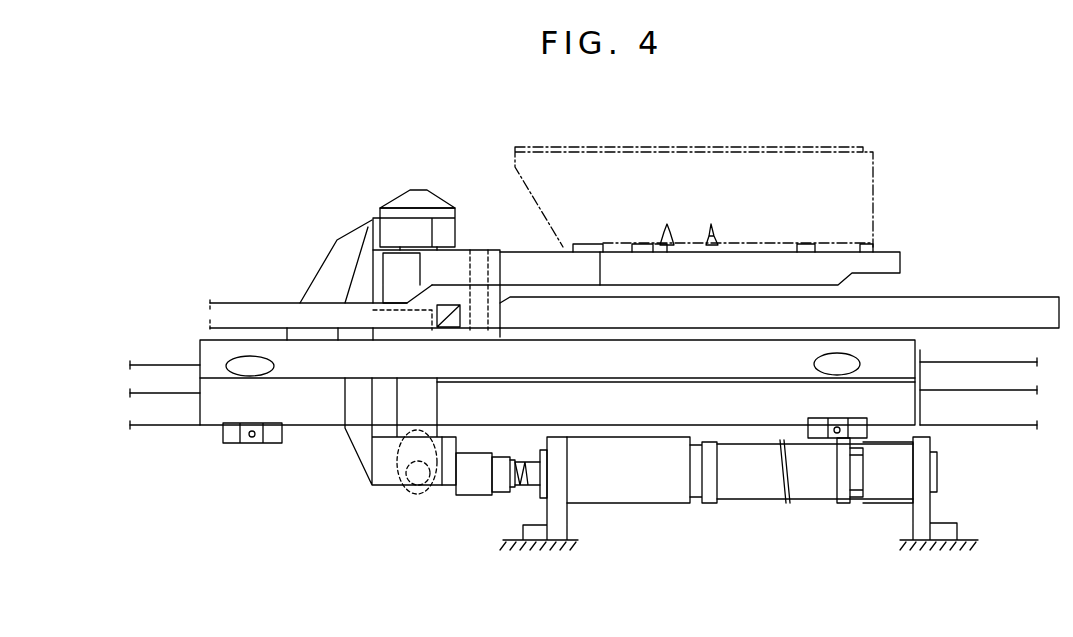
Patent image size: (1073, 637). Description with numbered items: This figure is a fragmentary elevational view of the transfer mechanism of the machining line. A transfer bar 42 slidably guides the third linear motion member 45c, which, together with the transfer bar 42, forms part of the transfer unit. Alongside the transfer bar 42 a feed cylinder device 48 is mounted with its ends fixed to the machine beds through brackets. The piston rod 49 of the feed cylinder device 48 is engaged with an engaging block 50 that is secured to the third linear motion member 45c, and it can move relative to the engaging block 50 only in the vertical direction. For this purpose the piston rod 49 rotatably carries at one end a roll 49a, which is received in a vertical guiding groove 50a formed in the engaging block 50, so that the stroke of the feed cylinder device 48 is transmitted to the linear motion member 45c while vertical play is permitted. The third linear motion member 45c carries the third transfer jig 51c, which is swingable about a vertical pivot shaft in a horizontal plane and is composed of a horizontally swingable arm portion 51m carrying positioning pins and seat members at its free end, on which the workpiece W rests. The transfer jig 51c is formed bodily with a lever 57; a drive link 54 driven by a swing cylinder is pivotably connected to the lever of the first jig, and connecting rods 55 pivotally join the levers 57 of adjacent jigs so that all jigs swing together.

The transfer bar 42 is at (1010, 417).
The third linear motion member 45c is at (635, 418).
The feed cylinder device 48 is at (753, 502).
The piston rod 49 is at (537, 483).
The roll 49a is at (415, 495).
The engaging block 50 is at (383, 477).
The vertical guiding groove 50a is at (397, 450).
The third transfer jig 51c is at (908, 256).
The arm portion 51m is at (558, 265).
The drive link 54 is at (598, 315).
The connecting rod 55 is at (245, 310).
The lever 57 is at (462, 258).
The workpiece W is at (867, 178).